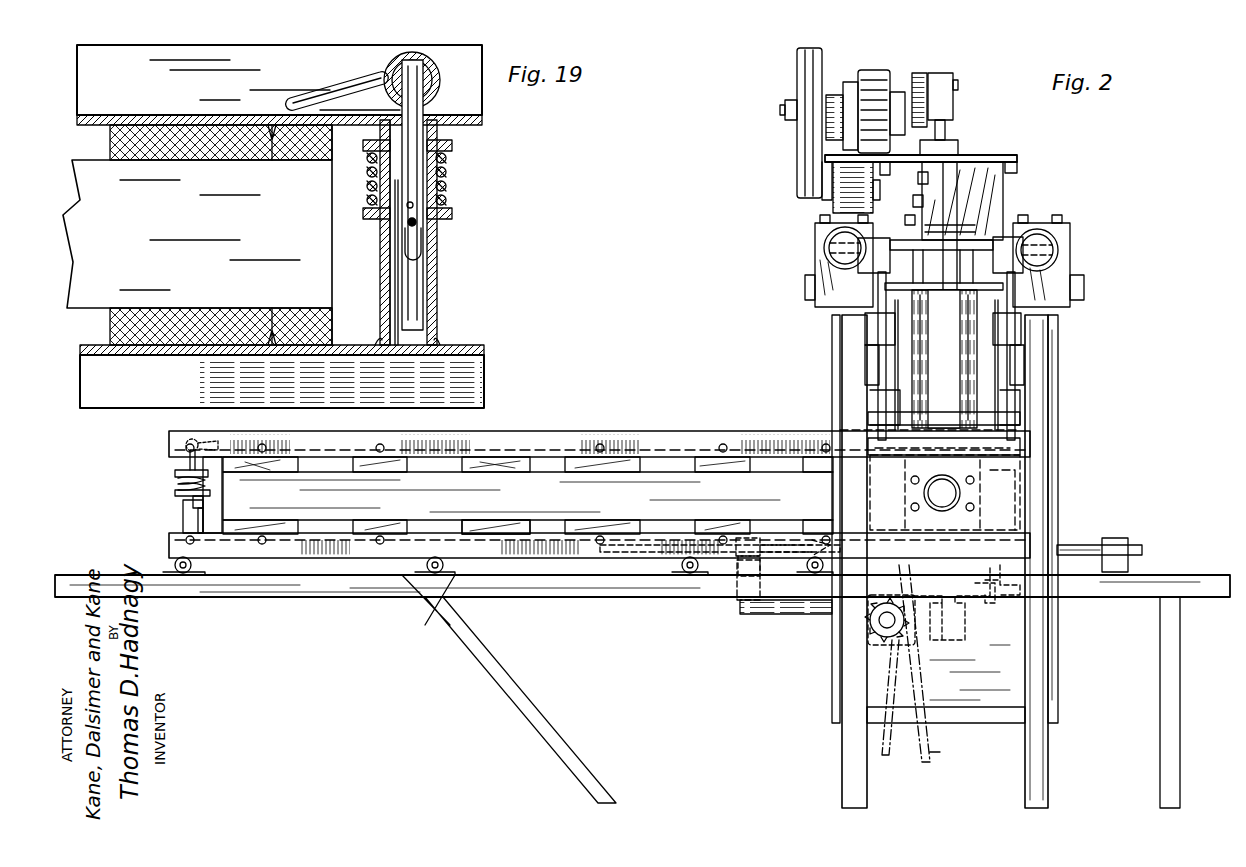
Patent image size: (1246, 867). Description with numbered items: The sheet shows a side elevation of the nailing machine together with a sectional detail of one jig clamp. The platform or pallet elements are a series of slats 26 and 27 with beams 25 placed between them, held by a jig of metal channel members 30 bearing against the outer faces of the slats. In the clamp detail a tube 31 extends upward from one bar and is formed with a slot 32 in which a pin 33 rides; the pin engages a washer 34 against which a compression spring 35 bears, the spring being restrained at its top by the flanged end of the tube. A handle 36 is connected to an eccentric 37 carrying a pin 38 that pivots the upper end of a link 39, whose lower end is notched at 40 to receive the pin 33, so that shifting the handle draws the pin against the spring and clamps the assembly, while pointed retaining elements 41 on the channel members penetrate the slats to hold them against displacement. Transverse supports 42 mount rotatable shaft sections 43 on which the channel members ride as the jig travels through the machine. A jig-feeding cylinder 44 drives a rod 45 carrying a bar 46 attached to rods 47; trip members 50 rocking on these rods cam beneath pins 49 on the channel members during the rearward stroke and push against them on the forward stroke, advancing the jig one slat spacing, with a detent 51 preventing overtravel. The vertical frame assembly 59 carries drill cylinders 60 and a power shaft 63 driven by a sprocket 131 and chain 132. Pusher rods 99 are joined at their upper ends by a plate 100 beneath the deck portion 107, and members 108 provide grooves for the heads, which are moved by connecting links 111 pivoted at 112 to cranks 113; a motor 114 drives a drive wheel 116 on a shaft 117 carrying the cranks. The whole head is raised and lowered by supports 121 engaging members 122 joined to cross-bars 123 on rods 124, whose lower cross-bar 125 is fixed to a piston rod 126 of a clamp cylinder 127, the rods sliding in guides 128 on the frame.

In FIG. 19, the beam 25 is at (197, 235).
In FIG. 2, the beam 25 is at (528, 496).
In FIG. 2, the slat 26 is at (500, 520).
In FIG. 19, the slat 27 is at (172, 160).
In FIG. 2, the slat 27 is at (616, 456).
In FIG. 19, the channel member 30 is at (165, 95).
In FIG. 2, the channel member 30 is at (688, 432).
In FIG. 19, the tube 31 is at (438, 285).
In FIG. 2, the tube 31 is at (185, 520).
In FIG. 19, the slot 32 is at (420, 250).
In FIG. 2, the slot 32 is at (198, 512).
In FIG. 19, the pin 33 is at (418, 223).
In FIG. 2, the pin 33 is at (193, 500).
In FIG. 19, the washer 34 is at (374, 214).
In FIG. 2, the washer 34 is at (175, 493).
In FIG. 19, the compression spring 35 is at (448, 170).
In FIG. 2, the compression spring 35 is at (178, 483).
In FIG. 19, the handle 36 is at (352, 76).
In FIG. 19, the eccentric 37 is at (430, 86).
In FIG. 2, the eccentric 37 is at (185, 449).
In FIG. 19, the pin 38 is at (420, 68).
In FIG. 19, the link 39 is at (426, 130).
In FIG. 19, the notch 40 is at (413, 205).
In FIG. 19, the retaining element 41 is at (274, 140).
In FIG. 2, the support 42 is at (250, 592).
In FIG. 2, the shaft section 43 is at (430, 597).
In FIG. 2, the jig-feeding cylinder 44 is at (770, 614).
In FIG. 2, the rod 45 is at (963, 600).
In FIG. 2, the bar 46 is at (1118, 538).
In FIG. 2, the rod 47 is at (1085, 545).
In FIG. 2, the pin 49 is at (560, 456).
In FIG. 2, the trip member 50 is at (812, 520).
In FIG. 2, the detent 51 is at (985, 605).
In FIG. 2, the frame assembly 59 is at (1038, 398).
In FIG. 2, the cylinder 60 is at (945, 492).
In FIG. 2, the power shaft 63 is at (887, 625).
In FIG. 2, the pusher rod 99 is at (940, 247).
In FIG. 2, the plate 100 is at (925, 222).
In FIG. 2, the deck portion 107 is at (985, 156).
In FIG. 2, the member 108 is at (1005, 184).
In FIG. 2, the connecting link 111 is at (955, 103).
In FIG. 2, the pivot 112 is at (905, 203).
In FIG. 2, the crank 113 is at (920, 74).
In FIG. 2, the motor 114 is at (833, 200).
In FIG. 2, the drive wheel 116 is at (797, 70).
In FIG. 2, the shaft 117 is at (785, 110).
In FIG. 2, the support 121 is at (1062, 218).
In FIG. 2, the member 122 is at (1058, 242).
In FIG. 2, the cross-bar 123 is at (1010, 235).
In FIG. 2, the rod 124 is at (1015, 365).
In FIG. 2, the cross-bar 125 is at (1012, 446).
In FIG. 2, the piston rod 126 is at (868, 420).
In FIG. 2, the cylinder 127 is at (950, 347).
In FIG. 2, the guide 128 is at (868, 330).
In FIG. 2, the sprocket 131 is at (872, 625).
In FIG. 2, the chain 132 is at (878, 697).